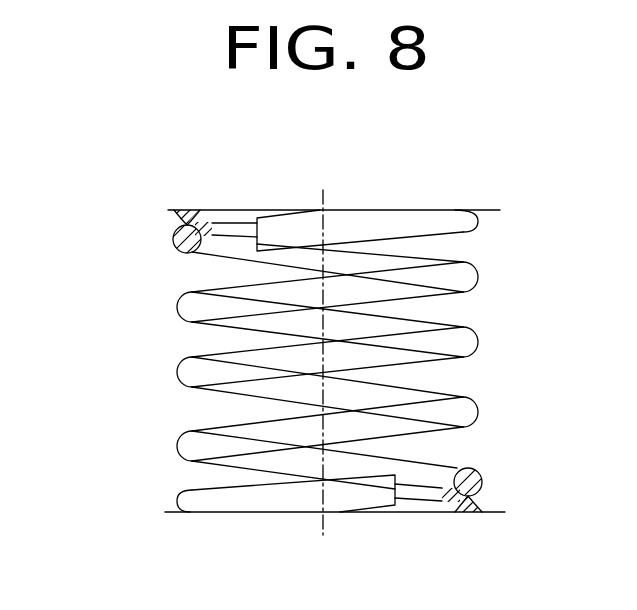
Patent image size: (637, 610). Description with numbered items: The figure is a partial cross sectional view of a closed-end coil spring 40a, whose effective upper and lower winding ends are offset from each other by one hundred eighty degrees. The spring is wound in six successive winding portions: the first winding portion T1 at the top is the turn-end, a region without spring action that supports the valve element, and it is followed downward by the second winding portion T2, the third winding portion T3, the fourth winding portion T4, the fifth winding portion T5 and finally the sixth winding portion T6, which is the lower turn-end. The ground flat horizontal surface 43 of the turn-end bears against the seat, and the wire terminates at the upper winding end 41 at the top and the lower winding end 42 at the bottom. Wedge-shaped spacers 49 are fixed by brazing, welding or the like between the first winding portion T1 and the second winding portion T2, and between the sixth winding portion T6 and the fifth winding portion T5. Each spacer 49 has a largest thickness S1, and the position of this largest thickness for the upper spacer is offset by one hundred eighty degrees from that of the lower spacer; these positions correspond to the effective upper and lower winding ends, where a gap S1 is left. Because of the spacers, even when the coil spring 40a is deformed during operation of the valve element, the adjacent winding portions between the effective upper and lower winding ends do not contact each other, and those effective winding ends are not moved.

The coil spring 40a is at (152, 350).
The upper winding end 41 is at (185, 222).
The lower winding end 42 is at (462, 512).
The horizontal surface 43 is at (332, 210).
The wedge-shaped spacer 49 is at (172, 225).
The largest thickness of spacer S1 is at (235, 247).
The first winding portion T1 is at (342, 230).
The second winding portion T2 is at (342, 263).
The third winding portion T3 is at (342, 331).
The fourth winding portion T4 is at (342, 395).
The fifth winding portion T5 is at (342, 465).
The sixth winding portion T6 is at (299, 495).